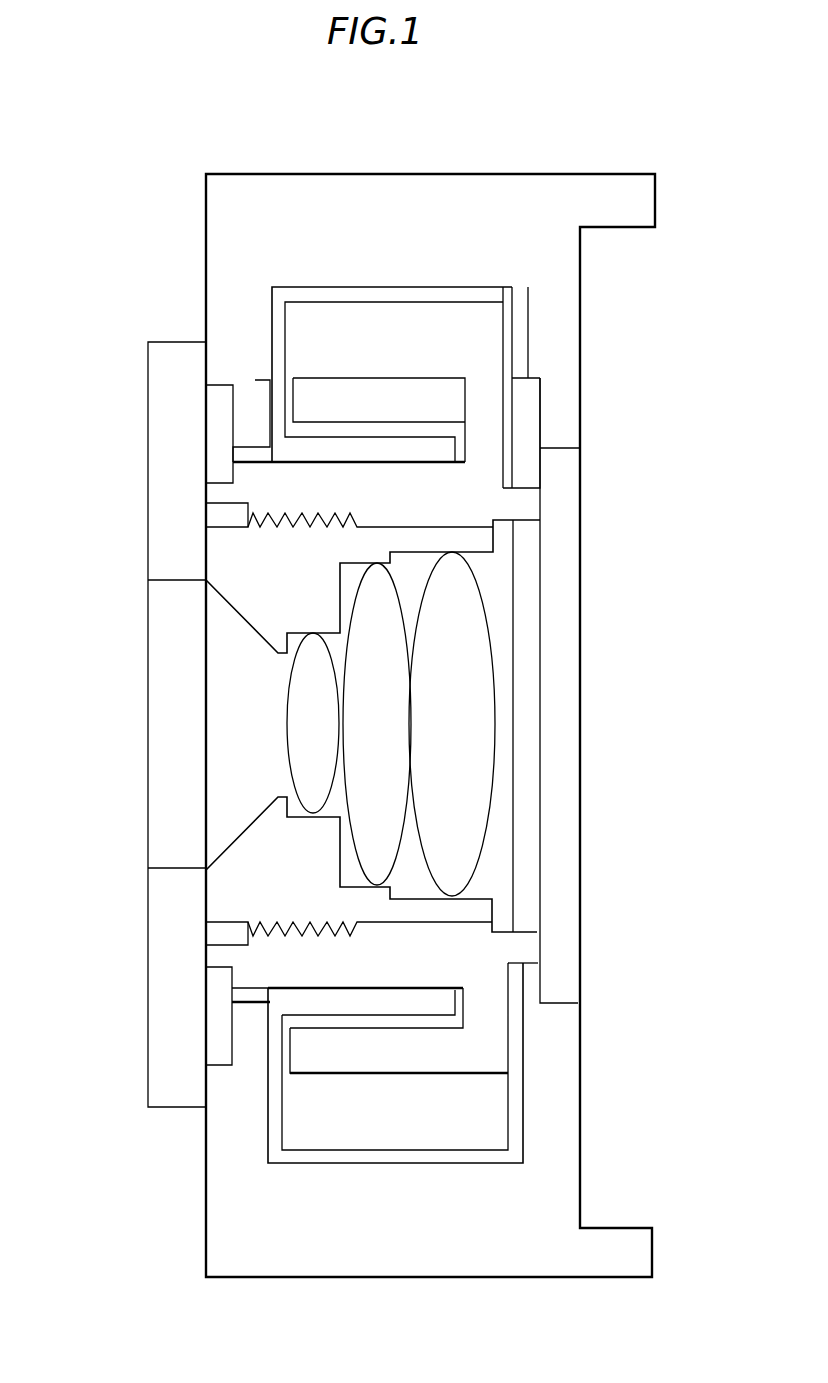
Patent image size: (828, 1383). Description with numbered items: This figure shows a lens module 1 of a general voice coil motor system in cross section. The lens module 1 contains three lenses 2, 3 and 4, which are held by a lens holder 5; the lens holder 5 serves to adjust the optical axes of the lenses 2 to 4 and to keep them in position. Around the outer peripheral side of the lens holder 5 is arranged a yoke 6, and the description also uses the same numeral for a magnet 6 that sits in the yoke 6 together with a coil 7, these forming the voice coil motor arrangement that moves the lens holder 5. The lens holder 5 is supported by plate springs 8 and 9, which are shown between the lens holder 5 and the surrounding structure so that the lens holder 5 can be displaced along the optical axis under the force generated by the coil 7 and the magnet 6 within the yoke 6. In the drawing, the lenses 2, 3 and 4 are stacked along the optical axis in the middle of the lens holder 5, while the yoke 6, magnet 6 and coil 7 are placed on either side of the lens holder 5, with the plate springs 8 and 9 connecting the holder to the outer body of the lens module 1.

The lens module 1 is at (396, 100).
The lens 2 is at (303, 716).
The lens 3 is at (373, 652).
The lens 4 is at (465, 732).
The lens holder 5 is at (232, 553).
The yoke 6 is at (275, 297).
The coil 7 is at (313, 1050).
The plate spring 8 is at (263, 392).
The plate spring 9 is at (515, 303).